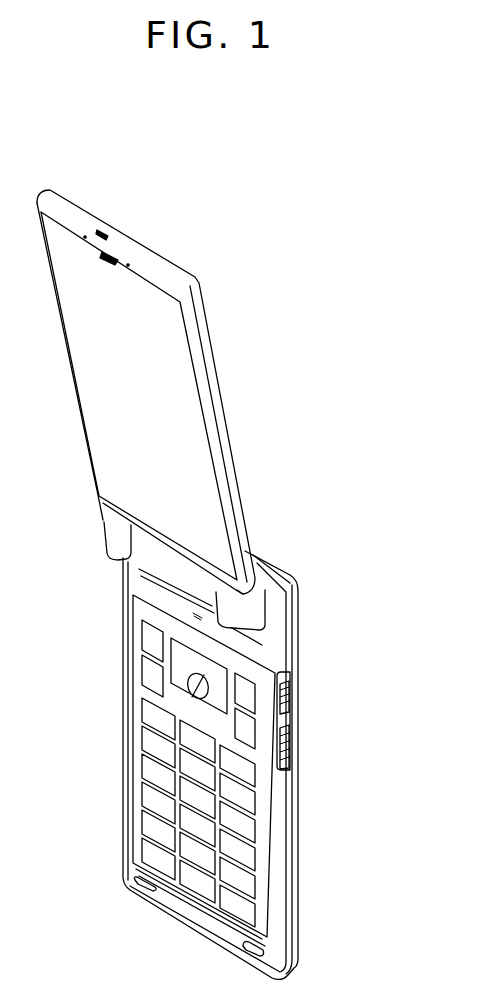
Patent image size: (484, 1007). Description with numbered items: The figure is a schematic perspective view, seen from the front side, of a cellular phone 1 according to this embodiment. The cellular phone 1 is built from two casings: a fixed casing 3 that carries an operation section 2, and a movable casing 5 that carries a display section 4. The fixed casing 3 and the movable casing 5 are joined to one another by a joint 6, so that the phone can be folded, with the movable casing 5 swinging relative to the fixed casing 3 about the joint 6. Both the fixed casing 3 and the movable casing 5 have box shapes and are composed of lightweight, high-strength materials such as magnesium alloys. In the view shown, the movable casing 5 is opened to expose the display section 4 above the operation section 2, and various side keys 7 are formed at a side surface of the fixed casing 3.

The cellular phone 1 is at (348, 295).
The operation section 2 is at (158, 743).
The fixed casing 3 is at (295, 880).
The display section 4 is at (110, 385).
The movable casing 5 is at (217, 386).
The joint 6 is at (155, 557).
The side keys 7 is at (290, 693).